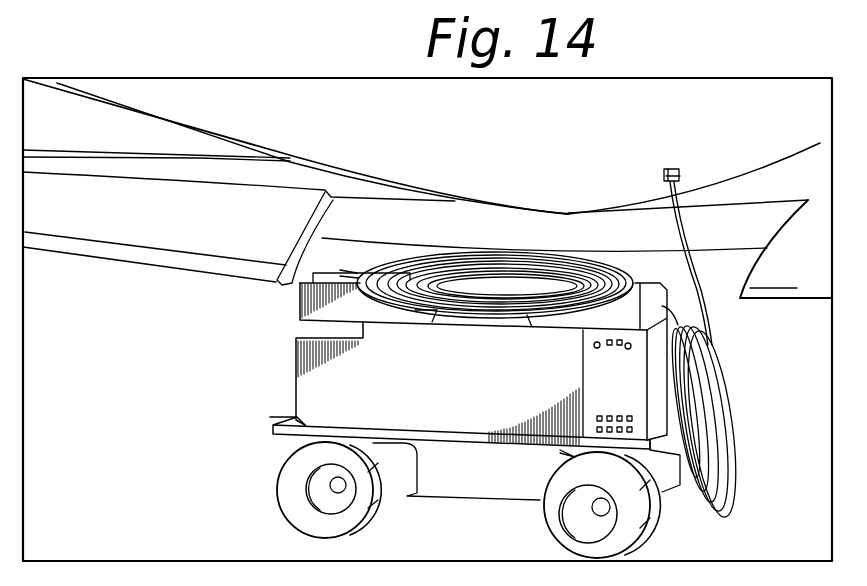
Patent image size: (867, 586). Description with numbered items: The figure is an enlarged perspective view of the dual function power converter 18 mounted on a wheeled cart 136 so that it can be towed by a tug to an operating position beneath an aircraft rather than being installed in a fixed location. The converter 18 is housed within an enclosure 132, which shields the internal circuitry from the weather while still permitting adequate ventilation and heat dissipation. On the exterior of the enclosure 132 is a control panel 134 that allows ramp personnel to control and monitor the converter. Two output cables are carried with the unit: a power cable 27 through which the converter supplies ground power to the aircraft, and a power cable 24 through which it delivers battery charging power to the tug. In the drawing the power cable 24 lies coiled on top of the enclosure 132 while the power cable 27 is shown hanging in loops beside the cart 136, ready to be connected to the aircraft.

The dual function power converter 18 is at (471, 404).
The power cable 24 is at (300, 297).
The power cable 27 is at (703, 308).
The enclosure 132 is at (347, 397).
The control panel 134 is at (617, 385).
The wheeled cart 136 is at (650, 450).